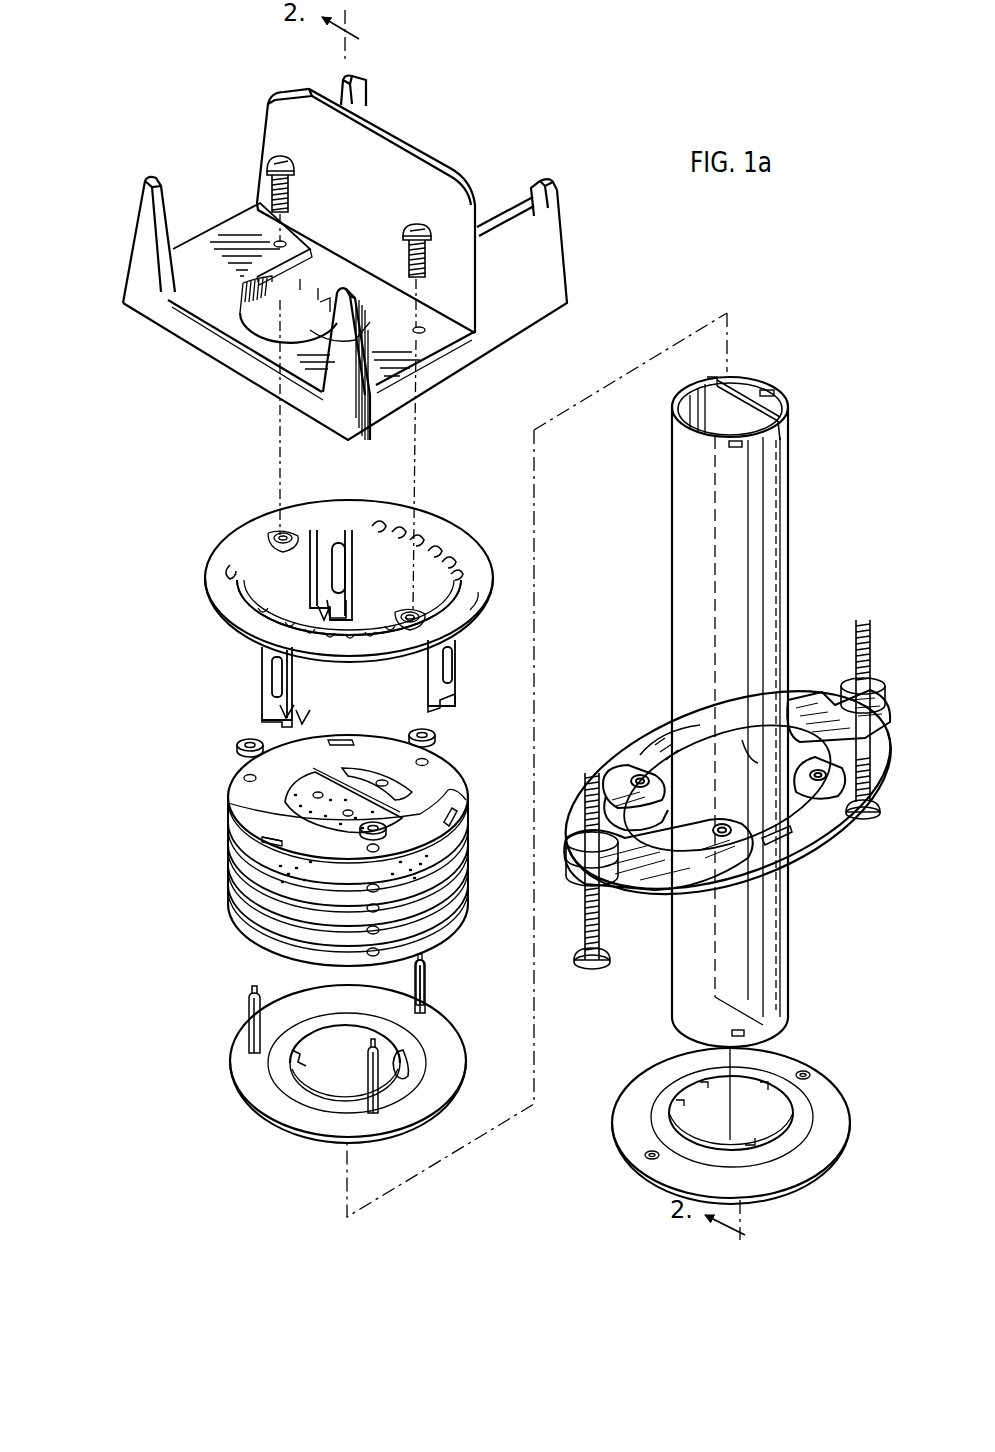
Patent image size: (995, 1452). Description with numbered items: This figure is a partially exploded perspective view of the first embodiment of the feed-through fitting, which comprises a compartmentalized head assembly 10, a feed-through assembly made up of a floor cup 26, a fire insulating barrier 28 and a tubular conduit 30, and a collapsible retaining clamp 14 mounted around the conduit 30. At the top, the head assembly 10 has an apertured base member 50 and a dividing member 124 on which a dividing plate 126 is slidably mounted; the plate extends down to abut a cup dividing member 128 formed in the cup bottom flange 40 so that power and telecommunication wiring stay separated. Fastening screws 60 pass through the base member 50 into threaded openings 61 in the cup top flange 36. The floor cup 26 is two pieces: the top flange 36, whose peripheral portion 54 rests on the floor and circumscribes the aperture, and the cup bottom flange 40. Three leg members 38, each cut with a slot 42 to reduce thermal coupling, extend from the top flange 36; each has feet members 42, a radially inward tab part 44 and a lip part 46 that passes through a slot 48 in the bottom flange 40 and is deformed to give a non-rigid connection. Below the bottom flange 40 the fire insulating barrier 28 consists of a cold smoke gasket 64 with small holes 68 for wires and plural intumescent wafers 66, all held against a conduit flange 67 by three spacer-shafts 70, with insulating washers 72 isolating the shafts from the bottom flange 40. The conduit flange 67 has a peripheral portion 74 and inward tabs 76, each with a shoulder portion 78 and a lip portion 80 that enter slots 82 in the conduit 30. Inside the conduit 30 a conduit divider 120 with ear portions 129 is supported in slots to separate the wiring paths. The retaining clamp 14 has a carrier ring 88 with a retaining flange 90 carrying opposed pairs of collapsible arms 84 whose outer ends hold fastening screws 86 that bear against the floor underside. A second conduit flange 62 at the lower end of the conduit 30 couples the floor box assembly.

The compartmentalized head assembly 10 is at (565, 242).
The dividing member 124 is at (411, 142).
The apertured base member 50 is at (197, 262).
The fastening screws 60 is at (290, 160).
The dividing plate 126 is at (262, 324).
The top flange 36 is at (425, 510).
The peripheral portion 54 is at (468, 600).
The threaded openings 61 is at (274, 536).
The leg members 38 is at (357, 562).
The tab part 44 is at (345, 600).
The lip part 46 is at (315, 614).
The slot / feet members 42 is at (268, 714).
The floor cup 26 is at (195, 742).
The fire insulating barrier 28 is at (160, 898).
The cup bottom flange 40 is at (450, 788).
The cup dividing member 128 is at (412, 790).
The slot 48 is at (457, 826).
The small holes 68 is at (262, 838).
The cold smoke gasket 64 is at (462, 865).
The intumescent wafers 66 is at (232, 870).
The insulating washers 72 is at (437, 735).
The spacer-shafts 70 is at (426, 964).
The conduit flange 67 is at (446, 1011).
The peripheral portion 74 is at (450, 1068).
The lip portion 80 is at (300, 1050).
The shoulder portion 78 is at (406, 1076).
The tabs 76 is at (290, 1060).
The tubular conduit 30 is at (788, 506).
The conduit divider 120 is at (745, 385).
The slots 82 is at (775, 394).
The ear portions 129 is at (789, 420).
The collapsible retaining clamp 14 is at (830, 850).
The carrier ring 88 is at (795, 845).
The retaining flange 90 is at (660, 722).
The collapsible arms 84 is at (830, 697).
The fastening screws 86 is at (863, 818).
The conduit flange 62 is at (820, 1058).